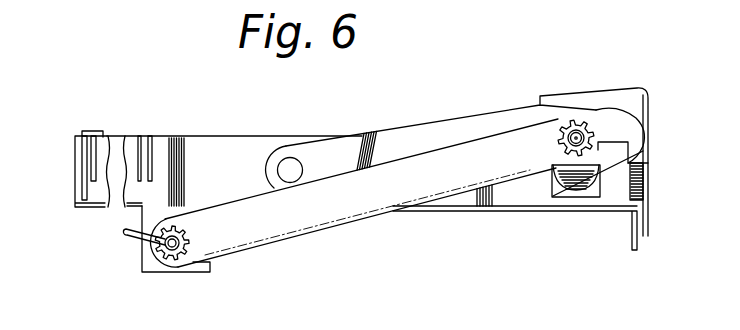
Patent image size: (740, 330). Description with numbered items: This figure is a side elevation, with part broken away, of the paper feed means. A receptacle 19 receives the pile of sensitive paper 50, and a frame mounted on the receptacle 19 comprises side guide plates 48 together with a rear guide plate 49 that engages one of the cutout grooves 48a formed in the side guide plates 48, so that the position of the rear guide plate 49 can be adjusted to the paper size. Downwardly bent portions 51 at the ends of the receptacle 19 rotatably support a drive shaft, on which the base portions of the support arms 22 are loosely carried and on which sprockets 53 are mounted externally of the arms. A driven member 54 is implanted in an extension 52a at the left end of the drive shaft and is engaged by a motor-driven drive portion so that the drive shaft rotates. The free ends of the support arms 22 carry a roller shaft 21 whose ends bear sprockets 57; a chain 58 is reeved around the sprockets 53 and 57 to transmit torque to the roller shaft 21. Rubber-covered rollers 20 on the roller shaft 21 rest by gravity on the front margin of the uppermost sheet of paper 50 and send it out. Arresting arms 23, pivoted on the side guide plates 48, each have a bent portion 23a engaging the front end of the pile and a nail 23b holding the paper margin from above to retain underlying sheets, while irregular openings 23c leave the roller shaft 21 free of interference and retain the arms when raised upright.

The receptacle 19 is at (508, 207).
The rollers 20 is at (578, 168).
The roller shaft 21 is at (566, 120).
The support arms 22 is at (290, 237).
The arresting arms 23 is at (443, 126).
The bent portion 23a is at (648, 125).
The nail 23b is at (648, 165).
The openings 23c is at (622, 117).
The guide plates 48 is at (236, 146).
The cutout grooves 48a is at (139, 150).
The rear guide plate 49 is at (82, 157).
The sensitive paper 50 is at (644, 193).
The downwardly bent portions 51 is at (140, 265).
The extension 52a is at (170, 259).
The sprockets 53 is at (196, 252).
The driven member 54 is at (127, 235).
The sprockets 57 is at (577, 130).
The chain 58 is at (350, 222).